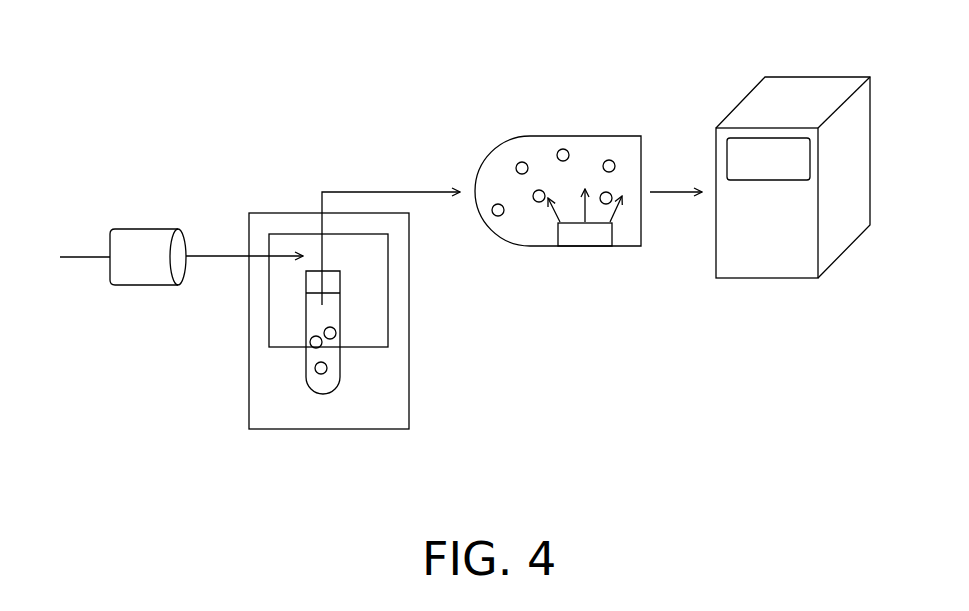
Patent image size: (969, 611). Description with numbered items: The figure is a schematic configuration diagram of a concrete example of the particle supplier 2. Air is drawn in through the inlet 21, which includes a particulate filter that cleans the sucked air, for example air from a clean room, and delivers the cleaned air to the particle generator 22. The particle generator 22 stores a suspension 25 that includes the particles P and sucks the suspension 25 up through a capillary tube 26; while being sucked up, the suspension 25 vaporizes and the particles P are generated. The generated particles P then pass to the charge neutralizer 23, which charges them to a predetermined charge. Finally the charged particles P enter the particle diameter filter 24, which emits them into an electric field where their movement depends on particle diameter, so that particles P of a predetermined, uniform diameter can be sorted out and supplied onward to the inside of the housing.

The particle supplier 2 is at (381, 82).
The inlet 21 is at (143, 275).
The particle generator 22 is at (360, 360).
The charge neutralizer 23 is at (558, 193).
The particle diameter filter 24 is at (768, 265).
The suspension 25 is at (311, 418).
The capillary tube 26 is at (332, 315).
The particles P is at (565, 148).